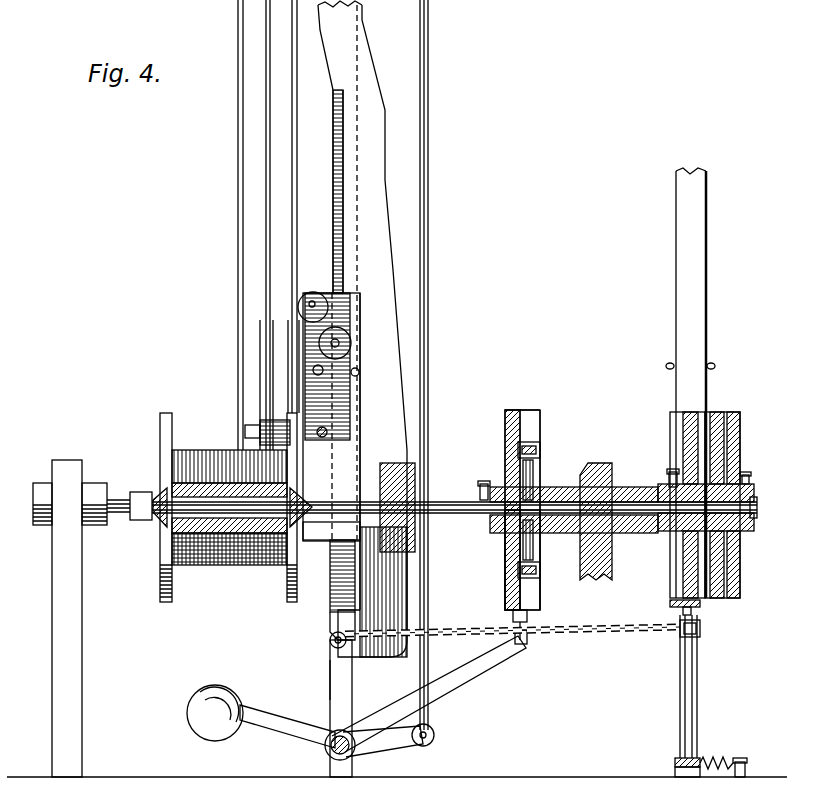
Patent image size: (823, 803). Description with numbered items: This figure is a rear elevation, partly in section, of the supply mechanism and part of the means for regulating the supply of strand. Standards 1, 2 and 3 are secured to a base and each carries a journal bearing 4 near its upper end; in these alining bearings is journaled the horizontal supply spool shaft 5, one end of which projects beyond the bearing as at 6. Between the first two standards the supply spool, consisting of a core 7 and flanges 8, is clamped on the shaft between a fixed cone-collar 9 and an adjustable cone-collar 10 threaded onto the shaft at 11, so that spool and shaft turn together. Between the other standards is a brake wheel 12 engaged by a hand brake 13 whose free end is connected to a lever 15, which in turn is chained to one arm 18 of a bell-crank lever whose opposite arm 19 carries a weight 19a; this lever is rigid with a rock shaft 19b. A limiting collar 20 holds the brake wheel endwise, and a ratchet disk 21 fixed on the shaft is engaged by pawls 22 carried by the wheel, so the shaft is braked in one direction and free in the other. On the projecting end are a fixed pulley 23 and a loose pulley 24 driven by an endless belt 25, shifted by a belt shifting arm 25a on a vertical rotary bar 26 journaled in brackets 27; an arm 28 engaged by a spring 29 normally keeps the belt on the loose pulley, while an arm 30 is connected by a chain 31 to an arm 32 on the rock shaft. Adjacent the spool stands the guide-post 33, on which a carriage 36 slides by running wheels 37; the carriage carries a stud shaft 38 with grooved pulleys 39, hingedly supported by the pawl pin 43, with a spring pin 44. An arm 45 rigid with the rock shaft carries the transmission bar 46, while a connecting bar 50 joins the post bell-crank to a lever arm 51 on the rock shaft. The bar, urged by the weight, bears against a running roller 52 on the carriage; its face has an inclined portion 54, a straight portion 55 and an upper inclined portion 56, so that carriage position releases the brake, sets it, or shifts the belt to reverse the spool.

The standard 1 is at (75, 590).
The standard 2 is at (417, 478).
The standard 3 is at (614, 563).
The journal bearing 4 is at (40, 487).
The supply spool shaft 5 is at (490, 518).
The projecting end of shaft 6 is at (752, 512).
The core 7 is at (220, 480).
The flanges 8 is at (166, 415).
The fixed cone-collar 9 is at (308, 530).
The adjustable cone-collar 10 is at (150, 490).
The threaded portion 11 is at (157, 516).
The brake wheel 12 is at (505, 585).
The hand brake 13 is at (540, 397).
The lever 15 is at (530, 615).
The arm of lever 18 is at (480, 672).
The lever arm 19 is at (265, 722).
The weight 19a is at (188, 720).
The rock shaft 19b is at (326, 752).
The limiting collar 20 is at (484, 481).
The ratchet disk 21 is at (535, 470).
The pawls 22 is at (540, 448).
The fixed pulley 23 is at (683, 432).
The loose pulley 24 is at (740, 432).
The endless belt 25 is at (708, 322).
The belt shifting arm 25a is at (716, 367).
The vertical rotary bar 26 is at (697, 695).
The brackets 27 is at (675, 770).
The arm 28 is at (676, 760).
The spring 29 is at (720, 762).
The arm 30 is at (682, 640).
The chain 31 is at (580, 640).
The arm 32 is at (330, 665).
The guide-post 33 is at (330, 600).
The carriage 36 is at (352, 437).
The running wheels 37 is at (314, 294).
The stud shaft 38 is at (250, 428).
The grooved pulleys 39 is at (313, 370).
The pin 43 is at (324, 440).
The pin 44 is at (262, 345).
The arm 45 is at (330, 680).
The transmission bar 46 is at (388, 312).
The connecting bar 50 is at (428, 650).
The lever arm 51 is at (385, 750).
The running roller 52 is at (350, 343).
The inclined face 54 is at (359, 373).
The straight portion 55 is at (343, 155).
The outwardly inclined portion 56 is at (325, 65).